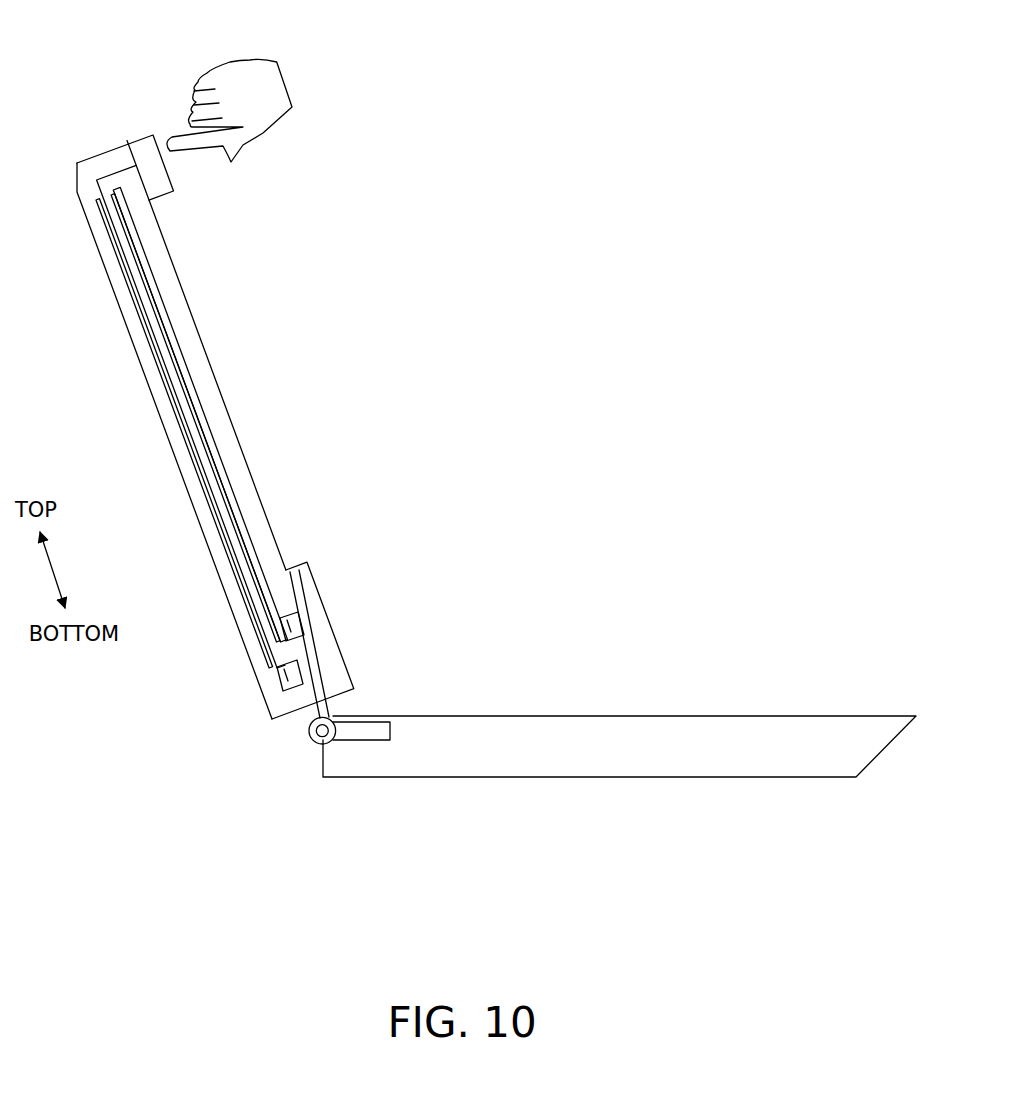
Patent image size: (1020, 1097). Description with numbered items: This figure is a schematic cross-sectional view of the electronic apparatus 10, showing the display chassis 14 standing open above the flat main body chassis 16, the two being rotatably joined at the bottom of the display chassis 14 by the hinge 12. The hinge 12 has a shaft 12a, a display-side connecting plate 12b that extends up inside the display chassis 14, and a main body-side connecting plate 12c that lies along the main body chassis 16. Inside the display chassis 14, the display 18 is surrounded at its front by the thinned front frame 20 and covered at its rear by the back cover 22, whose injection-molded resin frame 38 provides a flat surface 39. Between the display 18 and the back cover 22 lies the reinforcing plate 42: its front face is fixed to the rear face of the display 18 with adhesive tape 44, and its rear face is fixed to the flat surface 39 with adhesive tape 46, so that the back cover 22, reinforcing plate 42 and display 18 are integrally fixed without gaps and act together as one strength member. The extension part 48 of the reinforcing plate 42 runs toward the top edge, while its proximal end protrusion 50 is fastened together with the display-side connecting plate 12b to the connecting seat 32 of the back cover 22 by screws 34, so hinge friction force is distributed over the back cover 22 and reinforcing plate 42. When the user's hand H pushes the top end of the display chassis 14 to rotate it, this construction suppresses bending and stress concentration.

The electronic apparatus 10 is at (336, 239).
The hinge 12 is at (290, 761).
The shaft 12a is at (321, 745).
The display-side connecting plate 12b is at (305, 702).
The main body-side connecting plate 12c is at (370, 731).
The display chassis 14 is at (73, 110).
The main body chassis 16 is at (644, 684).
The display 18 is at (190, 340).
The front frame 20 is at (305, 588).
The back cover 22 is at (151, 441).
The connecting seat 32 is at (312, 648).
The screw 34 is at (305, 636).
The injection-molded resin frame 38 is at (160, 425).
The flat surface 39 is at (232, 520).
The reinforcing plate 42 is at (138, 433).
The adhesive tape 44 is at (195, 388).
The adhesive tape 46 is at (228, 407).
The extension part 48 is at (145, 305).
The proximal end protrusion 50 is at (285, 678).
The hand H is at (230, 60).